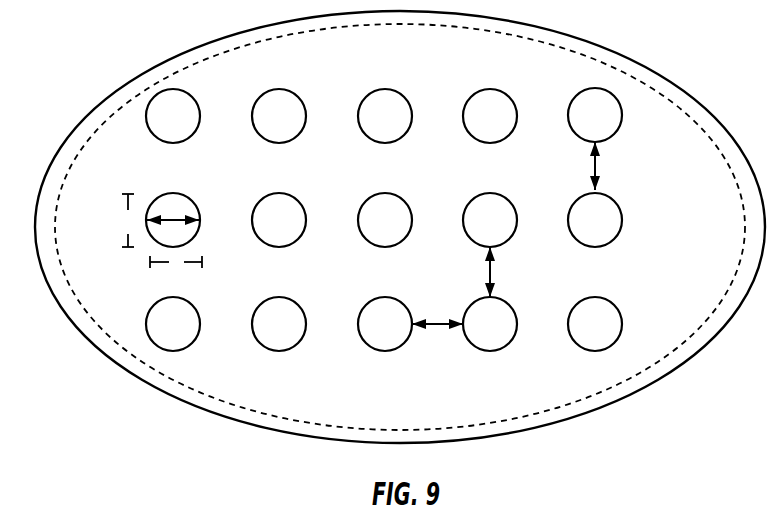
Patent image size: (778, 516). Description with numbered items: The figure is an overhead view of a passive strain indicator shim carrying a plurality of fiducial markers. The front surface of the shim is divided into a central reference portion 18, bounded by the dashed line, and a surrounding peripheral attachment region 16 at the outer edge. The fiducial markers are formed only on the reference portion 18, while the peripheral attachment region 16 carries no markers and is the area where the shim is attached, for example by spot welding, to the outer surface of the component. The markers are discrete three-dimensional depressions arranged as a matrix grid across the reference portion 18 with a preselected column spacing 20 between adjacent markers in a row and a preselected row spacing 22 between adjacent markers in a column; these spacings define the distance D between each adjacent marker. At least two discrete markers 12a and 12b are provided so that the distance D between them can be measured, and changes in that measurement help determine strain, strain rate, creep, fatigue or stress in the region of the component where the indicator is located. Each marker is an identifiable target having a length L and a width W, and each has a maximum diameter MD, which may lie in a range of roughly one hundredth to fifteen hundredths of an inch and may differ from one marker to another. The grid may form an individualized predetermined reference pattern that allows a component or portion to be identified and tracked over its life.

The peripheral attachment region 16 is at (658, 75).
The reference portion 18 is at (197, 62).
The first discrete marker 12a is at (591, 101).
The second discrete marker 12b is at (607, 232).
The column spacing 20 is at (437, 326).
The row spacing 22 is at (493, 273).
The distance D is at (605, 166).
The width W is at (130, 220).
The length L is at (176, 263).
The maximum diameter MD is at (175, 216).